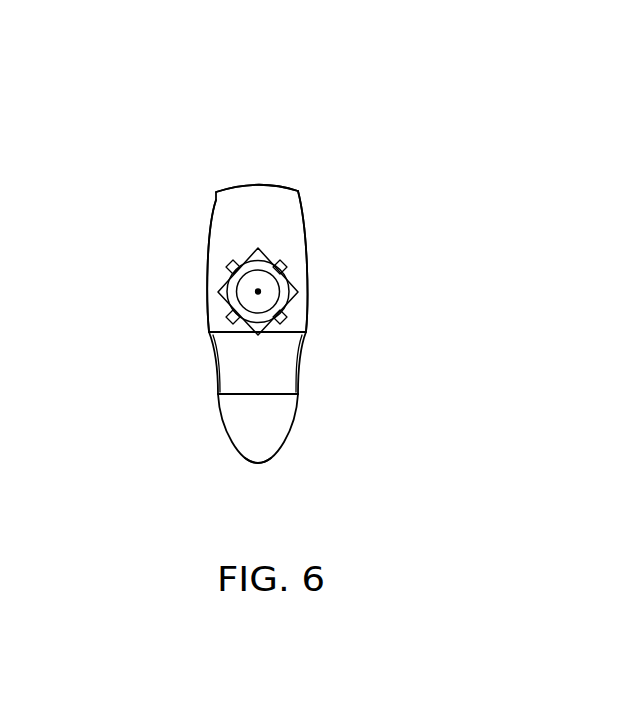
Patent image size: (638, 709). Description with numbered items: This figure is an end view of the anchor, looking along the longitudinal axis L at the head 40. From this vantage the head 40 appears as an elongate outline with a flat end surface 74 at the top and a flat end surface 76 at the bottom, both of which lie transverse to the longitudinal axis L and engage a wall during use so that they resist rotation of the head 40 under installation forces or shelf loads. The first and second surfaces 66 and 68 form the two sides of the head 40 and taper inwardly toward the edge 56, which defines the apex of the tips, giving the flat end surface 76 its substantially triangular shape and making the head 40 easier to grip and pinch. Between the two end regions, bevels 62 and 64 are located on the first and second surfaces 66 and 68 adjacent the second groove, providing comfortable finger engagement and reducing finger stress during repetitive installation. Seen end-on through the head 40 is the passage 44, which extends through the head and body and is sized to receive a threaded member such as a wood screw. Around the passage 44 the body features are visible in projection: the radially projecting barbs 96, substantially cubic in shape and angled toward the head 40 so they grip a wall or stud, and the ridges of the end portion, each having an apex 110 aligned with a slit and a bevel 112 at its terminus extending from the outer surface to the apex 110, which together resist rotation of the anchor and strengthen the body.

The head 40 is at (210, 138).
The flat end surface 74 is at (258, 197).
The second surface 68 is at (208, 252).
The first surface 66 is at (308, 285).
The barbs 96 is at (293, 259).
The passage 44 is at (262, 338).
The bevel 112 is at (252, 306).
The apex 110 is at (258, 292).
The longitudinal axis L is at (230, 282).
The bevel 64 is at (212, 362).
The bevel 62 is at (300, 364).
The flat end surface 76 is at (280, 433).
The edge 56 is at (258, 463).